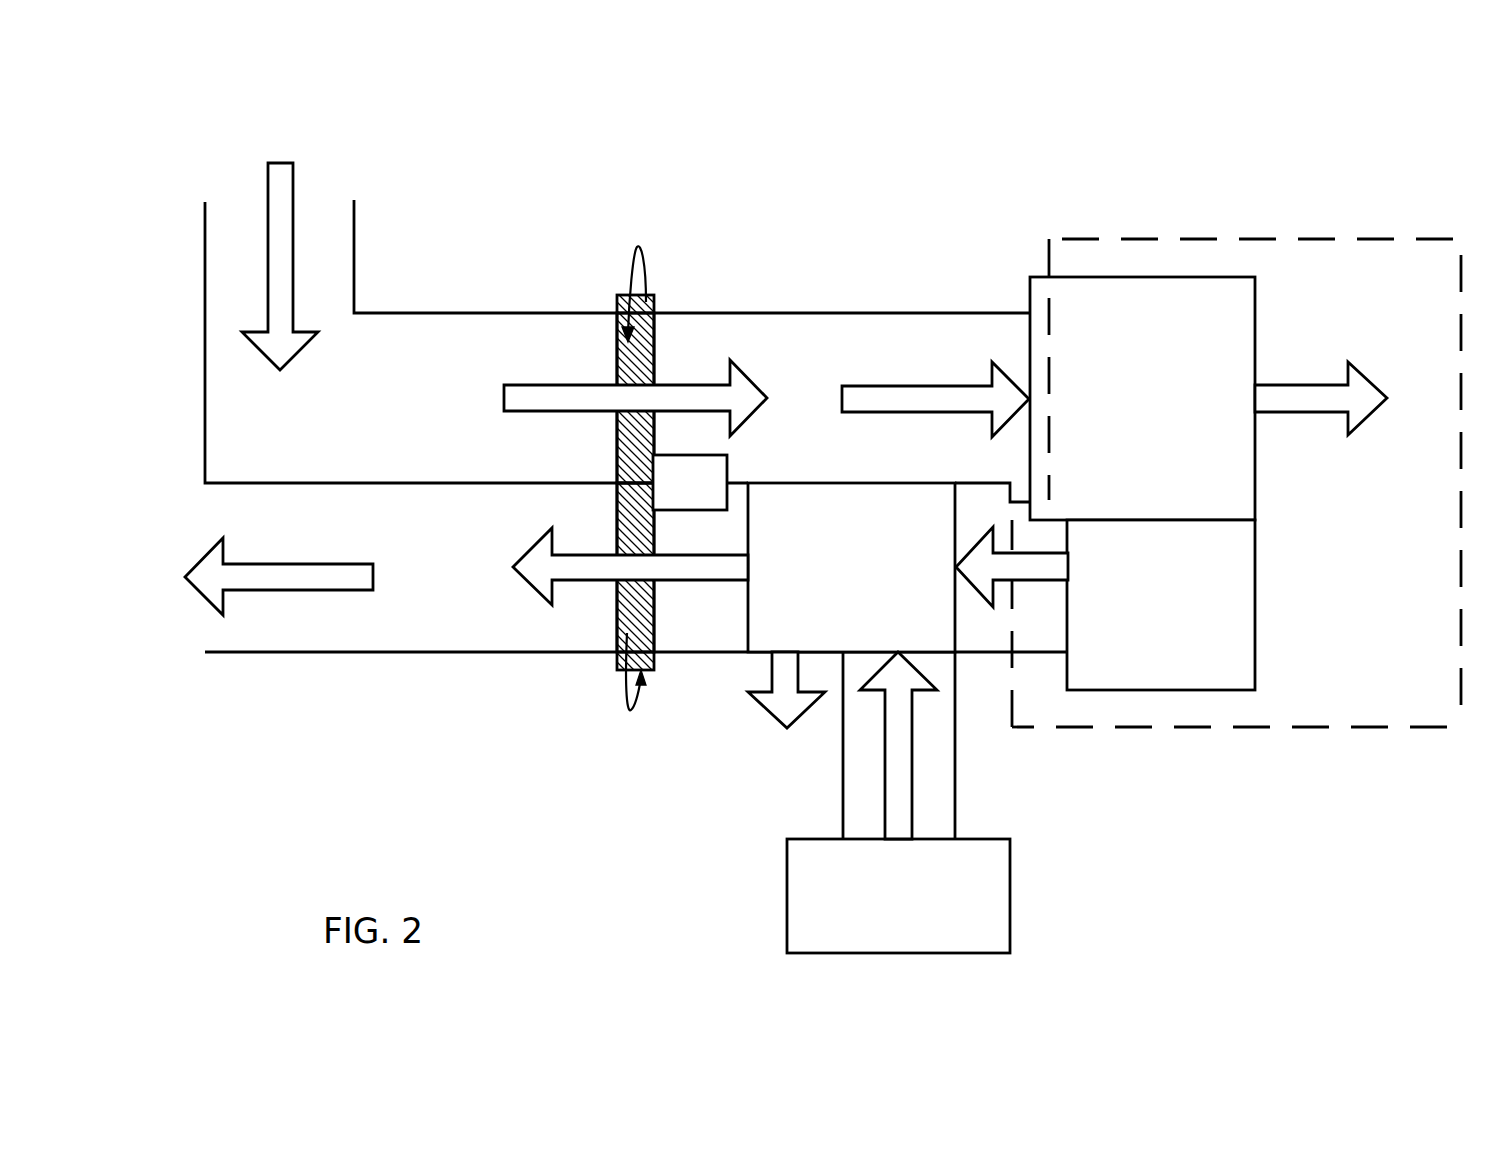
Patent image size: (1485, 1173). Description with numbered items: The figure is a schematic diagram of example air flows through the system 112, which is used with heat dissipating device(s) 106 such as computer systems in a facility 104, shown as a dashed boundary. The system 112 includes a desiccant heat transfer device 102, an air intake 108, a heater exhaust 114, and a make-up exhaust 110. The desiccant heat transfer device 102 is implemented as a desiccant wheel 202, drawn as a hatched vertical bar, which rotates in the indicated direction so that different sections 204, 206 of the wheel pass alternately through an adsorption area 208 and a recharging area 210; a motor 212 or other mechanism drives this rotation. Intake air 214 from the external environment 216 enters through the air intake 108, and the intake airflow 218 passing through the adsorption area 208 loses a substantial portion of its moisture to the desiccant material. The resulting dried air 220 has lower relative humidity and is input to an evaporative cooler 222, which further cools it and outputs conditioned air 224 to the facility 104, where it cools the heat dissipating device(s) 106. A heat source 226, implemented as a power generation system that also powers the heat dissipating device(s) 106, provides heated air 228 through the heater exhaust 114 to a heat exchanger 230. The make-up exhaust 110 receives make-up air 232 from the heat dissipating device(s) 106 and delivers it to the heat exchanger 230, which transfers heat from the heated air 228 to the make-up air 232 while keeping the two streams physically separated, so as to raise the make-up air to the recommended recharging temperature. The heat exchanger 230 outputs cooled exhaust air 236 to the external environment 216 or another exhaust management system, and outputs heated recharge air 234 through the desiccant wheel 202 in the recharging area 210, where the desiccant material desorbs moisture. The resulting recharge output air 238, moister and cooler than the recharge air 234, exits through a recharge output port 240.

The desiccant heat transfer device 102 is at (684, 460).
The facility 104 is at (1006, 350).
The heat dissipating device(s) 106 is at (1204, 597).
The air intake 108 is at (683, 230).
The make-up exhaust 110 is at (1099, 647).
The system 112 is at (1236, 422).
The heater exhaust 114 is at (811, 791).
The desiccant wheel 202 is at (678, 470).
The section of the desiccant wheel 204 is at (597, 398).
The section of the desiccant wheel 206 is at (597, 567).
The adsorption area 208 is at (562, 306).
The recharging area 210 is at (562, 656).
The motor 212 is at (690, 482).
The intake air 214 is at (250, 260).
The external environment 216 is at (537, 205).
The intake airflow 218 is at (592, 394).
The dried air 220 is at (902, 394).
The evaporative cooler 222 is at (1185, 398).
The conditioned air 224 is at (1344, 381).
The heat source 226 is at (855, 879).
The heated air 228 is at (851, 745).
The heat exchanger 230 is at (851, 567).
The make-up air 232 is at (1038, 566).
The recharge air 234 is at (601, 555).
The exhaust air 236 is at (754, 698).
The recharge output air 238 is at (313, 572).
The recharge output port 240 is at (157, 497).